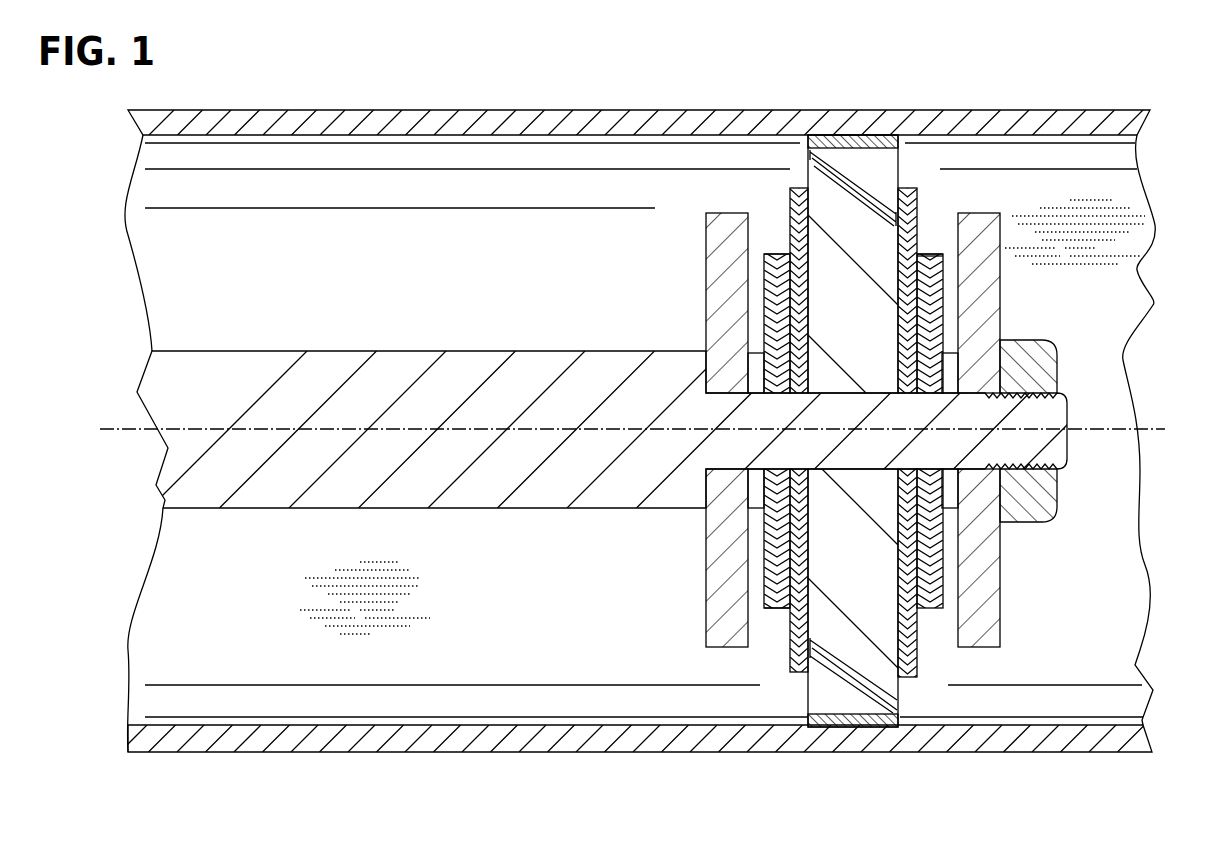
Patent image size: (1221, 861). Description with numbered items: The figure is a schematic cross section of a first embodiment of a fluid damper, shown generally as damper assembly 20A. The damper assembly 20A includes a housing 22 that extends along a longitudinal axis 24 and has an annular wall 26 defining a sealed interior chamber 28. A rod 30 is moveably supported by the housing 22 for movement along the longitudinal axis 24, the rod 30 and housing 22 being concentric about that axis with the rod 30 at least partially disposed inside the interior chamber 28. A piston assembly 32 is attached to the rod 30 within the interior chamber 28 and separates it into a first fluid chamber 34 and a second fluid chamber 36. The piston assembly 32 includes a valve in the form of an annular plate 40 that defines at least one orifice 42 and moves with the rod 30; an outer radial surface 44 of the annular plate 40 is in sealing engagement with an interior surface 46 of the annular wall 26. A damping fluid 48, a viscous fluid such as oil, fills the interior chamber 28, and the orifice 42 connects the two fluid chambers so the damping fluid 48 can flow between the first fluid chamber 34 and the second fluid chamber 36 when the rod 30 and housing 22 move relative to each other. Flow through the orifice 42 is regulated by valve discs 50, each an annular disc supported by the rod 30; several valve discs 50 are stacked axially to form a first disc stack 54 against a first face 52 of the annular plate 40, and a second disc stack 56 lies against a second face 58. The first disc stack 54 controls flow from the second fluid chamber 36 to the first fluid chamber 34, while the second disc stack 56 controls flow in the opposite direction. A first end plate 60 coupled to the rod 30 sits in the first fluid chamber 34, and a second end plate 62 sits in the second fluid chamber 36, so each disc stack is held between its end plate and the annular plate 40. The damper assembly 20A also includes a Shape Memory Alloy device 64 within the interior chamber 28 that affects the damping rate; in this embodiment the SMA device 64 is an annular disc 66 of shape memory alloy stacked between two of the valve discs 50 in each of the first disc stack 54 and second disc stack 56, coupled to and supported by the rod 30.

The damper assembly 20A is at (1086, 62).
The housing 22 is at (648, 110).
The longitudinal axis 24 is at (125, 429).
The annular wall 26 is at (727, 127).
The interior chamber 28 is at (396, 261).
The rod 30 is at (258, 372).
The piston assembly 32 is at (1026, 158).
The first fluid chamber 34 is at (543, 584).
The second fluid chamber 36 is at (1076, 631).
The annular plate 40 is at (860, 606).
The orifice 42 is at (862, 188).
The outer radial surface 44 is at (846, 136).
The interior surface 46 is at (962, 146).
The damping fluid 48 is at (1090, 270).
The valve disc 50 is at (783, 248).
The first face 52 is at (794, 186).
The first disc stack 54 is at (763, 291).
The second disc stack 56 is at (945, 568).
The second face 58 is at (928, 606).
The first end plate 60 is at (730, 637).
The second end plate 62 is at (985, 625).
The Shape Memory Alloy device 64 is at (931, 252).
The annular disc 66 is at (920, 292).